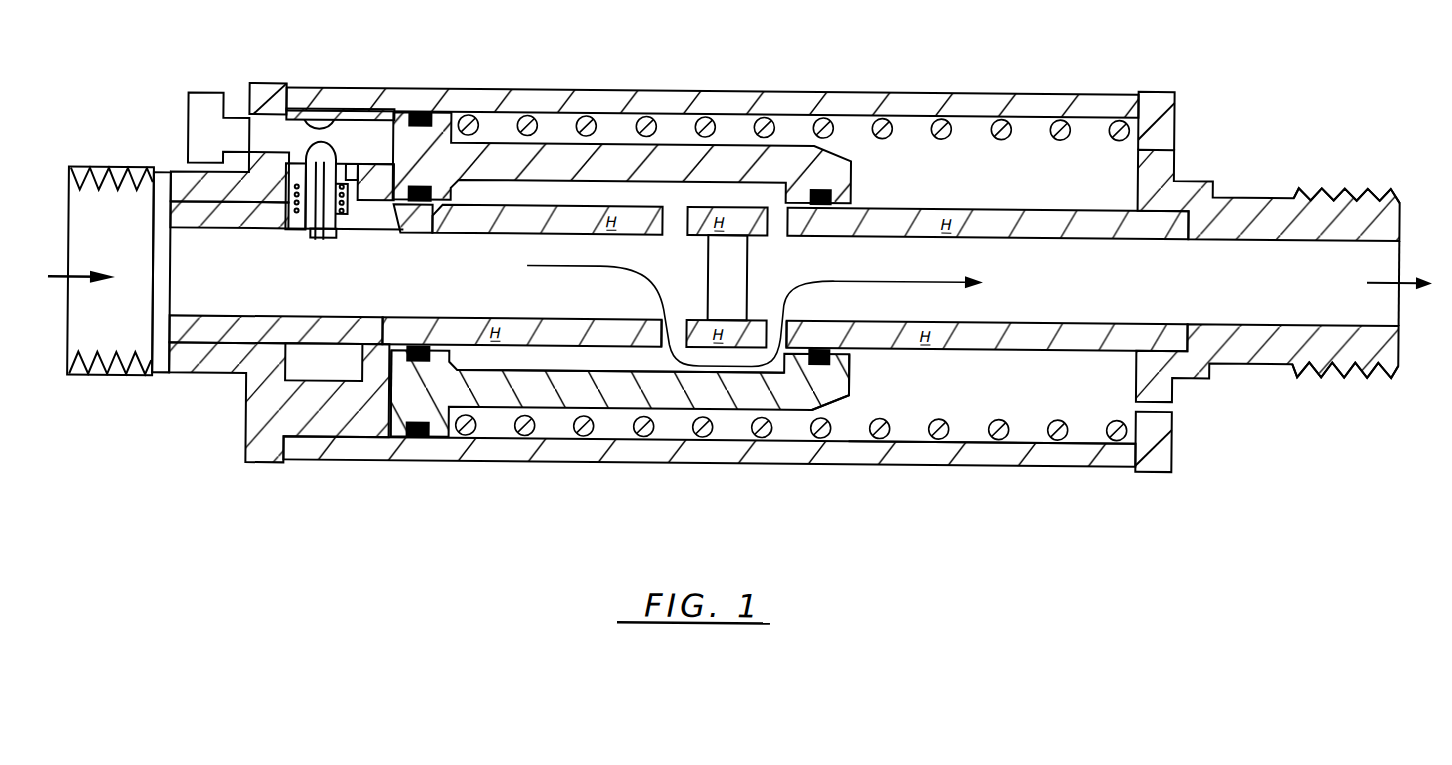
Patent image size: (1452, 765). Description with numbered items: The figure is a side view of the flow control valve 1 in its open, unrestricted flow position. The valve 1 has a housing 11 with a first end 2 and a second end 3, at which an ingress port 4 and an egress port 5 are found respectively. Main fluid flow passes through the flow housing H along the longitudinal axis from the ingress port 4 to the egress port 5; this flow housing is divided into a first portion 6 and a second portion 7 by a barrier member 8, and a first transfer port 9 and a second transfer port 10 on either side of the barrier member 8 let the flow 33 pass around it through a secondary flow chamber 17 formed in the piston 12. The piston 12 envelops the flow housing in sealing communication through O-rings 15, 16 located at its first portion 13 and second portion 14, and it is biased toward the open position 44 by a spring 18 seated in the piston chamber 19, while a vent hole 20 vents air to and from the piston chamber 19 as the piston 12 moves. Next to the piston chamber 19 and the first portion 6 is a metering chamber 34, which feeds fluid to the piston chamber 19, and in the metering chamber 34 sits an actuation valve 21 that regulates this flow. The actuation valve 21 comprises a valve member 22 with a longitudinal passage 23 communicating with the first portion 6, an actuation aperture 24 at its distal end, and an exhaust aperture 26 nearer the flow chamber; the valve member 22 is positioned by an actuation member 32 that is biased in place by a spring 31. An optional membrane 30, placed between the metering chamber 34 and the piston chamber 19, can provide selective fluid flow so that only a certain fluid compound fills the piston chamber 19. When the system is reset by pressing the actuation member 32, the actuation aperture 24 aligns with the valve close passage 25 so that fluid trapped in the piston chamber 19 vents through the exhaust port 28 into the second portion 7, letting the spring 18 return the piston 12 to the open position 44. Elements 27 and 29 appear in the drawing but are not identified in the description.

The valve 1 is at (912, 91).
The first end 2 is at (80, 172).
The second end 3 is at (1400, 205).
The ingress port 4 is at (70, 381).
The egress port 5 is at (1395, 365).
The first portion of flow housing 6 is at (450, 314).
The second portion of flow housing 7 is at (1031, 288).
The barrier member 8 is at (734, 284).
The first transfer port 9 is at (668, 330).
The second transfer port 10 is at (778, 335).
The housing 11 is at (804, 465).
The piston 12 is at (609, 400).
The first portion of piston 13 is at (832, 398).
The second portion of piston 14 is at (437, 401).
The O-ring 15 is at (822, 350).
The O-ring 16 is at (420, 349).
The secondary flow chamber 17 is at (557, 372).
The spring 18 is at (1012, 124).
The piston chamber 19 is at (1025, 394).
The vent hole 20 is at (1180, 402).
The actuation valve 21 is at (270, 197).
The valve member 22 is at (328, 247).
The longitudinal passage 23 is at (316, 240).
The actuation aperture 24 is at (328, 185).
The valve close passage 25 is at (413, 222).
The exhaust aperture 26 is at (312, 228).
The tube upper wall 27 is at (505, 238).
The exhaust port 28 is at (785, 235).
The valve guide 29 is at (352, 190).
The membrane 30 is at (418, 205).
The spring 31 is at (295, 205).
The actuation member 32 is at (190, 96).
The flow 33 is at (738, 309).
The metering chamber 34 is at (338, 374).
The open position 44 is at (402, 117).